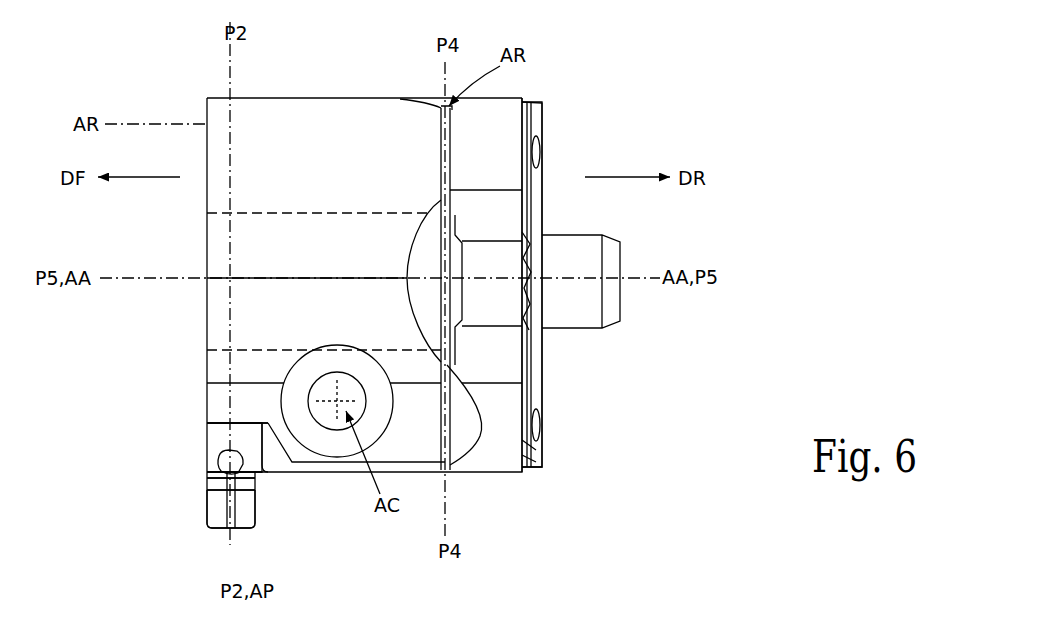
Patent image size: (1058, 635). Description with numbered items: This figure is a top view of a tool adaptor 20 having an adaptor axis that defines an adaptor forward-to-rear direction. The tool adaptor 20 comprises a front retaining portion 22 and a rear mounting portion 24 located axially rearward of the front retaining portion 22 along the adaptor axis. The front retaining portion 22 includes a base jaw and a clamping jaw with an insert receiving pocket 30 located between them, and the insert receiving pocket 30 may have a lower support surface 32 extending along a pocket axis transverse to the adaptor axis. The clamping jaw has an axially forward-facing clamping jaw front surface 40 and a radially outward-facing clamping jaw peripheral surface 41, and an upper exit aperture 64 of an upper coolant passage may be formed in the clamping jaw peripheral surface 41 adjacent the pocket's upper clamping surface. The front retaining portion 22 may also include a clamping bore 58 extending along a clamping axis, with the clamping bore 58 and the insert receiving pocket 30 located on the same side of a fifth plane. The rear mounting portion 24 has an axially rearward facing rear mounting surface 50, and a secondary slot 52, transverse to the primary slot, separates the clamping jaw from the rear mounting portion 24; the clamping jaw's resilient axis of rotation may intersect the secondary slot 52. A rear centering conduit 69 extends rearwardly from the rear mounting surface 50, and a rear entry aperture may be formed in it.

The tool adaptor 20 is at (615, 78).
The front retaining portion 22 is at (334, 132).
The rear mounting portion 24 is at (505, 127).
The insert receiving pocket 30 is at (213, 488).
The lower support surface 32 is at (218, 516).
The clamping jaw front surface 40 is at (204, 400).
The clamping jaw peripheral surface 41 is at (268, 411).
The rear mounting surface 50 is at (548, 178).
The secondary slot 52 is at (454, 427).
The clamping bore 58 is at (336, 409).
The upper exit aperture 64 is at (228, 462).
The rear centering conduit 69 is at (574, 304).